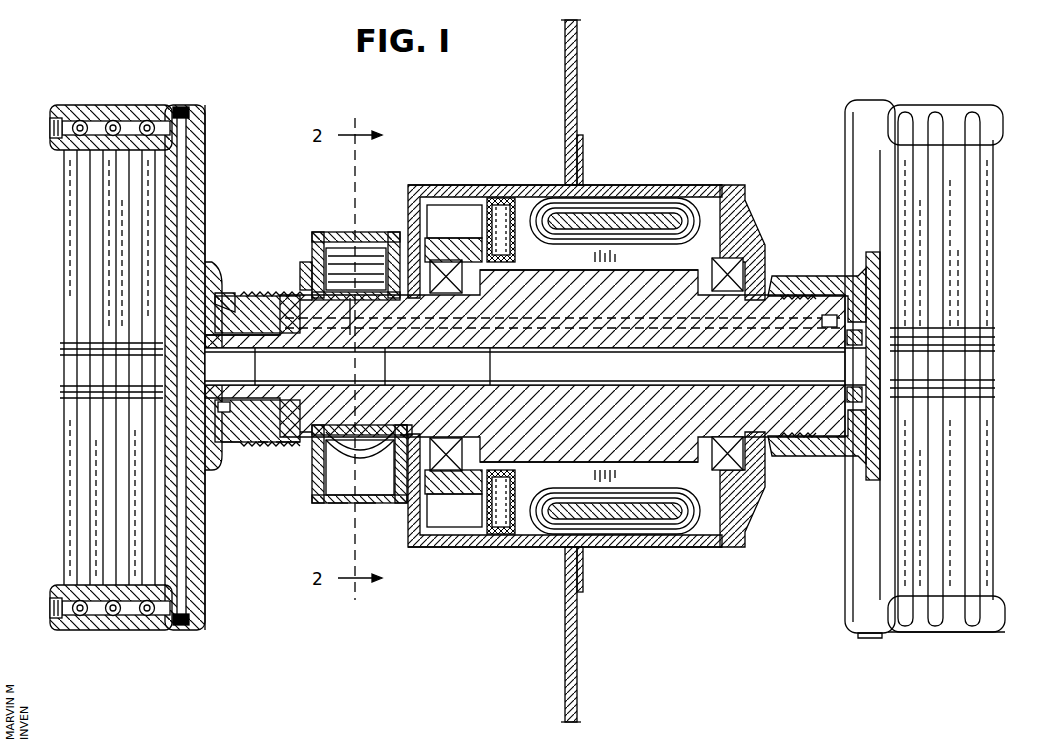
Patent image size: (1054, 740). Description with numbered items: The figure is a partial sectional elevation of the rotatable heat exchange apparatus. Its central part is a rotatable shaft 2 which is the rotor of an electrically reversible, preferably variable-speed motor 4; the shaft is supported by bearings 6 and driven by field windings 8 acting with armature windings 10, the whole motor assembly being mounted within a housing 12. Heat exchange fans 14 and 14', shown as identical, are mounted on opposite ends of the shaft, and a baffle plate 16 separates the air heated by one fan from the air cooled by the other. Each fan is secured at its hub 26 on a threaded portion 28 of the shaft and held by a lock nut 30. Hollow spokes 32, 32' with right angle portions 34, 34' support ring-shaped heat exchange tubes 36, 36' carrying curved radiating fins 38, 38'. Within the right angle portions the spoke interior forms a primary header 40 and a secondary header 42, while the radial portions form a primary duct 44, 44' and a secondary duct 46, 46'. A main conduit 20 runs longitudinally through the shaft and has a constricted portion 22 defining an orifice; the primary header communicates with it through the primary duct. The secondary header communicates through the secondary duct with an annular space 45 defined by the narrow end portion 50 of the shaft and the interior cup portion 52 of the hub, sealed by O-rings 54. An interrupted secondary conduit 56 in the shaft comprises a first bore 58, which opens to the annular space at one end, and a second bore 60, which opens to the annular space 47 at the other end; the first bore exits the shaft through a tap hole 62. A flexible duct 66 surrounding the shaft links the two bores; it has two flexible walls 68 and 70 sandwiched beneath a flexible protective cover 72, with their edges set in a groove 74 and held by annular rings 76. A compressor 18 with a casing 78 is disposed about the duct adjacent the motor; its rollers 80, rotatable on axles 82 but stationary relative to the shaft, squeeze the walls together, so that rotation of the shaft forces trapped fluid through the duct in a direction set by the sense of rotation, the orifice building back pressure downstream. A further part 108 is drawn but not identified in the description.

The rotatable shaft 2 is at (674, 407).
The motor 4 is at (615, 170).
The bearings 6 is at (745, 258).
The field windings 8 is at (640, 546).
The armature windings 10 is at (660, 196).
The housing 12 is at (404, 194).
The heat exchange fan 14 is at (119, 364).
The heat exchange fan 14' is at (916, 370).
The baffle plate 16 is at (578, 60).
The compressor 18 is at (368, 226).
The main conduit 20 is at (608, 372).
The constricted portion 22 is at (490, 360).
The hub 26 is at (228, 442).
The threaded portion 28 is at (262, 446).
The lock nut 30 is at (282, 446).
The hollow spokes 32 is at (218, 367).
The hollow spokes 32' is at (845, 369).
The right angle portions 34 is at (111, 379).
The right angle portions 34' is at (946, 648).
The heat exchange tubes 36 is at (85, 367).
The heat exchange tubes 36' is at (967, 370).
The radiating fins 38 is at (82, 358).
The radiating fins 38' is at (962, 370).
The primary header 40 is at (166, 124).
The secondary header 42 is at (162, 614).
The primary duct 44 is at (198, 367).
The primary duct 44' is at (824, 371).
The annular space 45 is at (218, 340).
The secondary duct 46 is at (210, 390).
The secondary duct 46' is at (817, 281).
The annular space 47 is at (806, 348).
The narrow end portion 50 is at (232, 407).
The interior cup portion 52 is at (238, 296).
The O-rings 54 is at (215, 298).
The secondary conduit 56 is at (350, 330).
The first bore 58 is at (274, 332).
The second bore 60 is at (548, 340).
The tap hole 62 is at (386, 328).
The flexible duct 66 is at (360, 467).
The flexible wall 68 is at (420, 318).
The flexible wall 70 is at (405, 298).
The flexible protective cover 72 is at (362, 294).
The groove 74 is at (412, 421).
The annular rings 76 is at (440, 262).
The casing 78 is at (336, 503).
The rollers 80 is at (330, 238).
The axles 82 is at (316, 268).
The clutch housing wall 108 is at (366, 503).